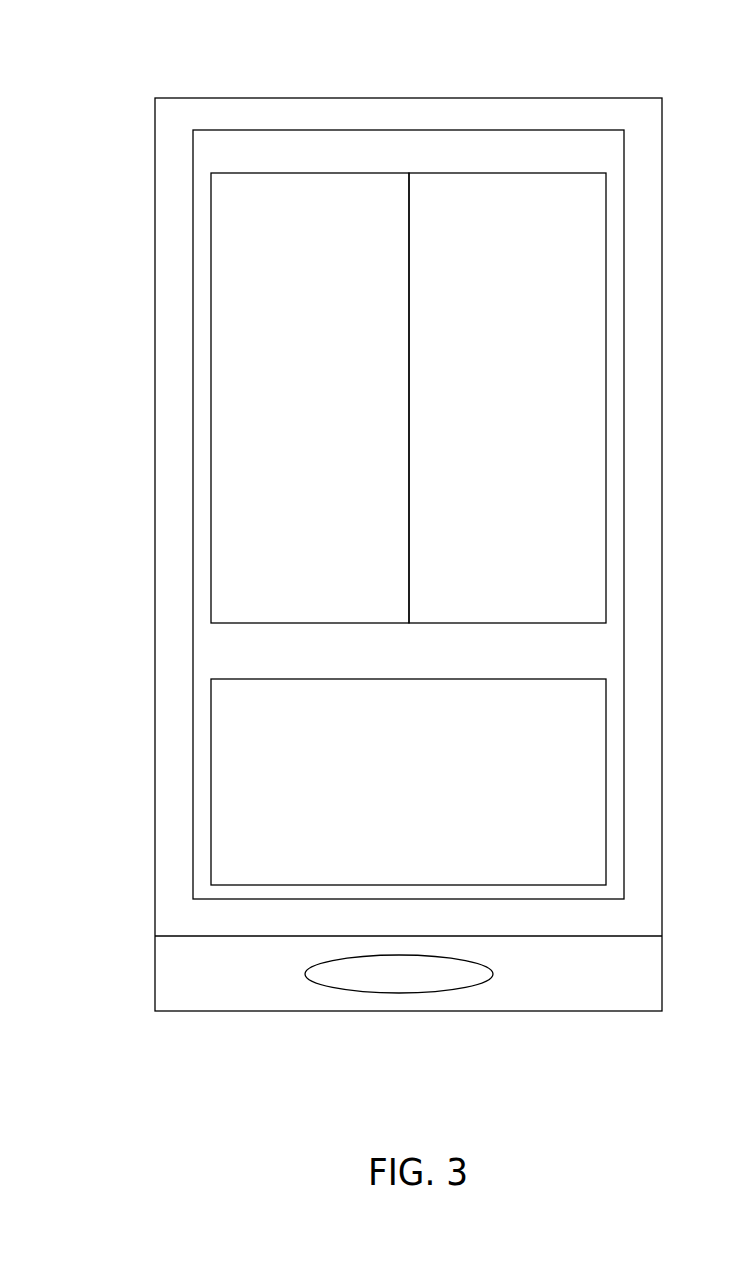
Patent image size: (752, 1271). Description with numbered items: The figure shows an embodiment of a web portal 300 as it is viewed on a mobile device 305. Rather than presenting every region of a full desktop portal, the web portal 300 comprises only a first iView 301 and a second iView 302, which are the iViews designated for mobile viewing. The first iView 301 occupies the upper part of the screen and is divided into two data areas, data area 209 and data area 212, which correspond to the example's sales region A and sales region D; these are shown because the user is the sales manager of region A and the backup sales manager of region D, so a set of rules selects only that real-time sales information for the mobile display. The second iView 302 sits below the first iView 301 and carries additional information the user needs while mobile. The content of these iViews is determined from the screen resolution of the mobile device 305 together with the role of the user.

The web portal 300 is at (300, 146).
The mobile device 305 is at (155, 613).
The first iView 301 is at (457, 172).
The region A data area 209 is at (332, 410).
The region D data area 212 is at (528, 410).
The second iView 302 is at (430, 792).